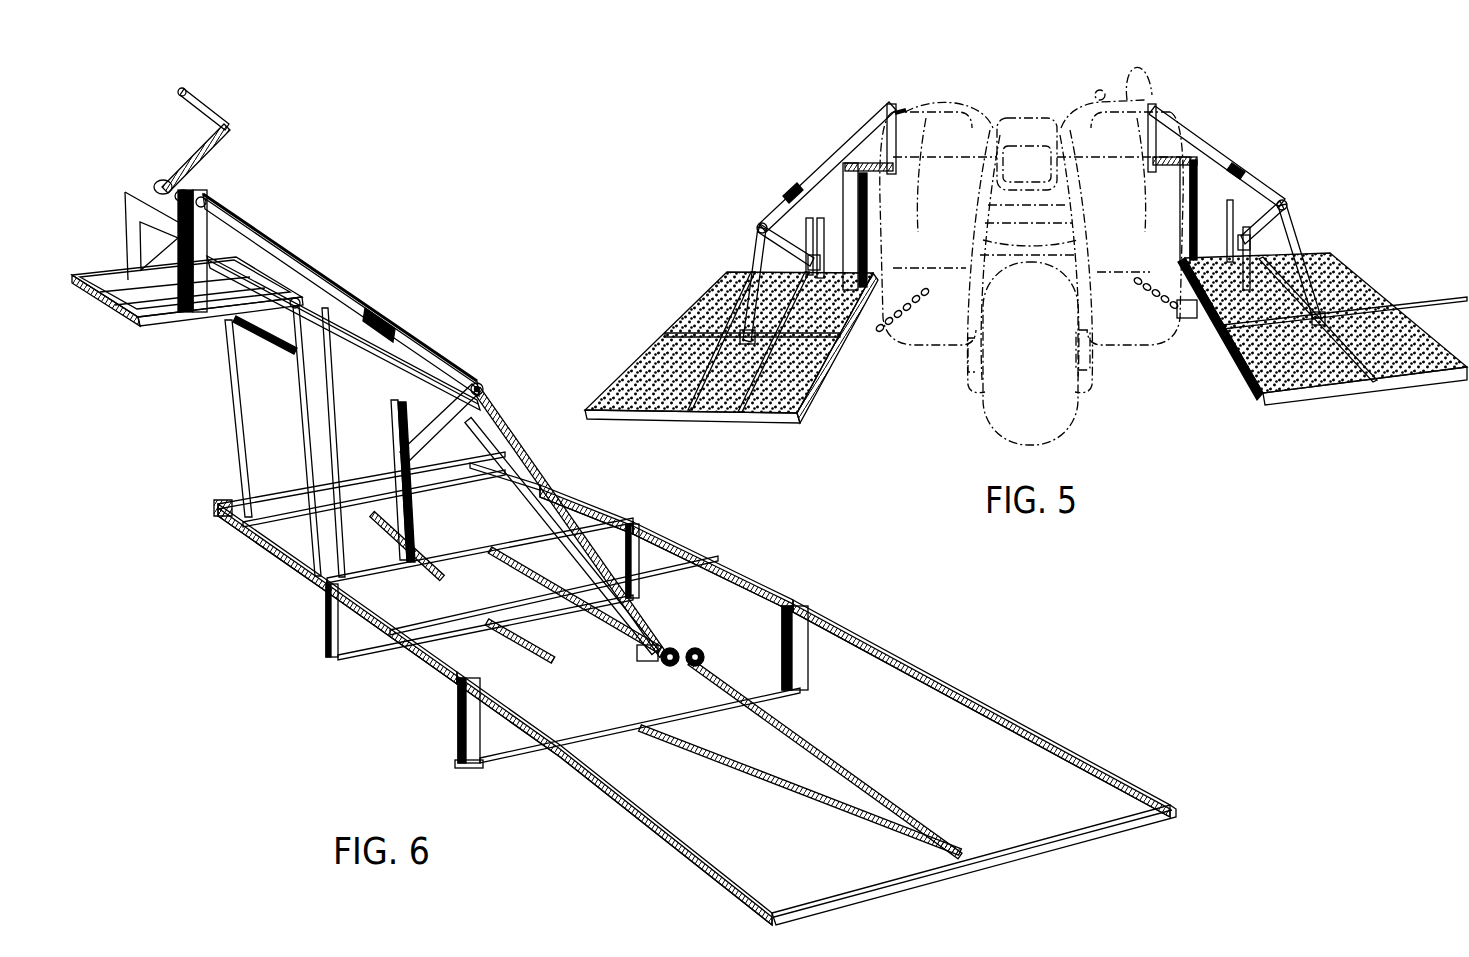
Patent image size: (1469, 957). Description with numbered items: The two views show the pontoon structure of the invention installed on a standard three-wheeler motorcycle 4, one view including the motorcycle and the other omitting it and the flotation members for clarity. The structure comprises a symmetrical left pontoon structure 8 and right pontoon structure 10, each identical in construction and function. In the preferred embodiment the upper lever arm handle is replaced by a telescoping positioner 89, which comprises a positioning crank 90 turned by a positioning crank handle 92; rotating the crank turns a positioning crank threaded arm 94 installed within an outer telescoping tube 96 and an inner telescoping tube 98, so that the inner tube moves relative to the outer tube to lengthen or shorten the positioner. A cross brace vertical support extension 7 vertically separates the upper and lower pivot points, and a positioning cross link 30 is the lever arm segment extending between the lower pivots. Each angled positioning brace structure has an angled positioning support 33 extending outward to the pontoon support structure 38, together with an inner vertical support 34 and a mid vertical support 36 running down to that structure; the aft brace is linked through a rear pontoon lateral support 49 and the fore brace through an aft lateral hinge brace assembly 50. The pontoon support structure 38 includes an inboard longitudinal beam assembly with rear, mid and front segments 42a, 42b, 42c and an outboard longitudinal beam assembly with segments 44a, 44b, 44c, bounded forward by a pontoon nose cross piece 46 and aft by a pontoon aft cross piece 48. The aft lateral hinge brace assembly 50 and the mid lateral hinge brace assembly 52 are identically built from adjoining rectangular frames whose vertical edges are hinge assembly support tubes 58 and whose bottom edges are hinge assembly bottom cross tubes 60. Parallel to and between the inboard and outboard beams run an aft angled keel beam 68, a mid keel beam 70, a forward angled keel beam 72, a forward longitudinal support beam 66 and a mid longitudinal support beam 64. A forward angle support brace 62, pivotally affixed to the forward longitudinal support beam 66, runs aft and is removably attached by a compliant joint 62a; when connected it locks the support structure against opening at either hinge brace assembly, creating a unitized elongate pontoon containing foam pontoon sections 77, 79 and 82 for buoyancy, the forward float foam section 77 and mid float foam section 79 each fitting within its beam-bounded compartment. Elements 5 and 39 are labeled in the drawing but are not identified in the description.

In FIG. 5, the three-wheeler motorcycle 4 is at (1020, 118).
In FIG. 6, the platform frame 5 is at (110, 308).
In FIG. 6, the cross brace vertical support extension 7 is at (172, 218).
In FIG. 5, the left pontoon structure 8 is at (1252, 180).
In FIG. 6, the left pontoon structure 8 is at (352, 268).
In FIG. 5, the right pontoon structure 10 is at (803, 168).
In FIG. 6, the positioning cross link 30 is at (482, 382).
In FIG. 6, the angled positioning support 33 is at (290, 340).
In FIG. 6, the inner vertical support 34 is at (232, 400).
In FIG. 6, the mid vertical support 36 is at (398, 480).
In FIG. 5, the pontoon support structure 38 is at (672, 322).
In FIG. 6, the pontoon support structure 38 is at (216, 508).
In FIG. 6, the cross member 39 is at (362, 570).
In FIG. 6, the pontoon inboard longitudinal beam assembly rear segment 42a is at (285, 552).
In FIG. 6, the pontoon inboard longitudinal beam assembly mid segment 42b is at (415, 672).
In FIG. 6, the pontoon inboard longitudinal beam assembly front segment 42c is at (635, 815).
In FIG. 6, the pontoon outboard longitudinal beam assembly rear segment 44a is at (548, 480).
In FIG. 6, the pontoon outboard longitudinal beam assembly mid segment 44b is at (692, 558).
In FIG. 6, the pontoon outboard longitudinal beam assembly front segment 44c is at (876, 630).
In FIG. 6, the pontoon nose cross piece 46 is at (1093, 835).
In FIG. 6, the pontoon aft cross piece 48 is at (285, 492).
In FIG. 6, the rear pontoon lateral support 49 is at (440, 493).
In FIG. 5, the aft lateral hinge brace assembly 50 is at (720, 290).
In FIG. 6, the aft lateral hinge brace assembly 50 is at (338, 660).
In FIG. 5, the mid lateral hinge brace assembly 52 is at (648, 345).
In FIG. 6, the mid lateral hinge brace assembly 52 is at (462, 768).
In FIG. 6, the hinge assembly support tube 58 is at (326, 616).
In FIG. 6, the hinge assembly bottom cross tube 60 is at (455, 622).
In FIG. 6, the forward angle support brace 62 is at (514, 455).
In FIG. 6, the compliant joint 62a is at (488, 404).
In FIG. 6, the mid longitudinal support beam 64 is at (598, 623).
In FIG. 6, the forward longitudinal support beam 66 is at (800, 727).
In FIG. 6, the aft angled keel beam 68 is at (402, 540).
In FIG. 6, the mid keel beam 70 is at (510, 640).
In FIG. 6, the forward angled keel beam 72 is at (753, 775).
In FIG. 5, the forward rectangular pontoon float foam section 77 is at (825, 400).
In FIG. 5, the mid rectangular pontoon float foam section 79 is at (852, 366).
In FIG. 5, the foam pontoon section 82 is at (882, 333).
In FIG. 5, the telescoping positioner 89 is at (825, 166).
In FIG. 6, the telescoping positioner 89 is at (378, 308).
In FIG. 6, the positioning crank 90 is at (200, 150).
In FIG. 6, the positioning crank handle 92 is at (184, 90).
In FIG. 6, the positioning crank threaded arm 94 is at (158, 180).
In FIG. 6, the positioning crank outer telescoping tube 96 is at (290, 244).
In FIG. 6, the positioning crank inner telescoping tube 98 is at (436, 350).